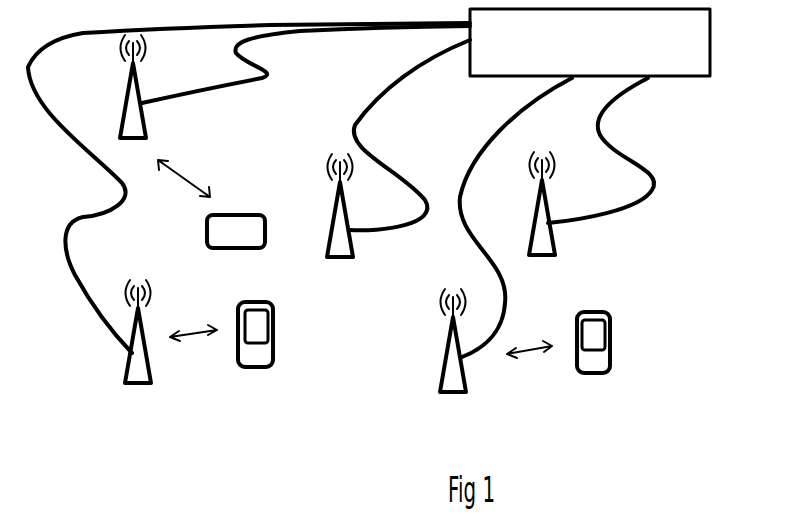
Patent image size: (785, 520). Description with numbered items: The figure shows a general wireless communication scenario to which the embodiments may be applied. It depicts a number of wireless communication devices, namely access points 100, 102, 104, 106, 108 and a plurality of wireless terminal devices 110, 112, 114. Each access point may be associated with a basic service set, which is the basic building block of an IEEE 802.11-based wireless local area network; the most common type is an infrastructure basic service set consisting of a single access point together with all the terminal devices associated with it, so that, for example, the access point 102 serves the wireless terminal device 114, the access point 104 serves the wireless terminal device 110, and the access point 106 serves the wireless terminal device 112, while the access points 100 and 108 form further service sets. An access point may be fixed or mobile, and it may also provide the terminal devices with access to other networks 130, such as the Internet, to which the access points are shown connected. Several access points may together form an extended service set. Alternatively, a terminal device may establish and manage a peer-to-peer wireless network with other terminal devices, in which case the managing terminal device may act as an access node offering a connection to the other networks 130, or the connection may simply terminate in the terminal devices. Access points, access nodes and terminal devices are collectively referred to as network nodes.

The access point 100 is at (370, 208).
The access point 102 is at (161, 91).
The access point 104 is at (167, 334).
The access point 106 is at (483, 344).
The access point 108 is at (571, 207).
The wireless terminal device 110 is at (229, 326).
The wireless terminal device 112 is at (566, 333).
The wireless terminal device 114 is at (207, 223).
The other networks 130 is at (590, 42).